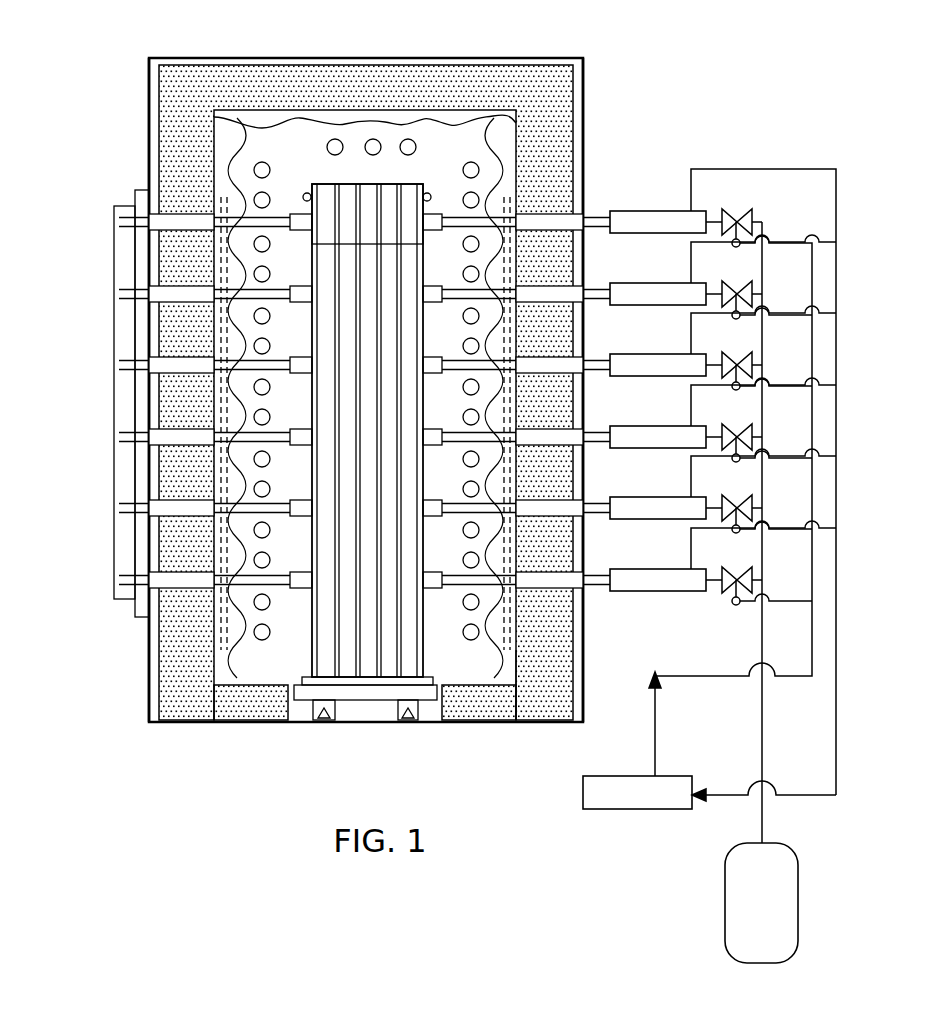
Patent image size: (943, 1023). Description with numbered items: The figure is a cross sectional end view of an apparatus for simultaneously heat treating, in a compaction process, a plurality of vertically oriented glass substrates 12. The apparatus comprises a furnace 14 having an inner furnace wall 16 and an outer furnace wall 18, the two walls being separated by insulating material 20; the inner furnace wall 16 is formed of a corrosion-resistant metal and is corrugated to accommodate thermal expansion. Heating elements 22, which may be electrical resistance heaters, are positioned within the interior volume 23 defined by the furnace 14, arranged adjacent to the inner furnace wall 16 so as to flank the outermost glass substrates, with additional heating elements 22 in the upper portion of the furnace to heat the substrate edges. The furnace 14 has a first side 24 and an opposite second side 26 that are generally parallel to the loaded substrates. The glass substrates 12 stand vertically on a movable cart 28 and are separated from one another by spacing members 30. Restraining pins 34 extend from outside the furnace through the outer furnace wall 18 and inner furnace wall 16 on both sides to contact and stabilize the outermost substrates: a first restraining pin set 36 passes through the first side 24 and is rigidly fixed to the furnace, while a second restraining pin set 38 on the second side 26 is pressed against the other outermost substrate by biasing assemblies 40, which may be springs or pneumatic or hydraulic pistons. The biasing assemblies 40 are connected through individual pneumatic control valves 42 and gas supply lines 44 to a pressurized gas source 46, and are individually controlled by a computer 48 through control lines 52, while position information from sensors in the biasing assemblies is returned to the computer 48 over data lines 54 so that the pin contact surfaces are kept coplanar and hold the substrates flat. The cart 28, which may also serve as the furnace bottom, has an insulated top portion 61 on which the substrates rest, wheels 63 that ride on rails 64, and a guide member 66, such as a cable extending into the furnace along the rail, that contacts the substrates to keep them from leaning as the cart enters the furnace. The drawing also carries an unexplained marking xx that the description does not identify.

The glass substrates 12 is at (337, 184).
The furnace 14 is at (140, 727).
The inner furnace wall 16 is at (258, 670).
The outer furnace wall 18 is at (142, 688).
The insulating material 20 is at (533, 77).
The heating elements 22 is at (228, 137).
The interior volume 23 is at (365, 396).
The first side 24 is at (138, 158).
The second side 26 is at (600, 112).
The movable cart 28 is at (296, 712).
The spacing members 30 is at (347, 184).
The restraining pins 34 is at (136, 588).
The first restraining pin set 36 is at (222, 647).
The second restraining pin set 38 is at (516, 696).
The biasing assemblies 40 is at (633, 211).
The pneumatic control valves 42 is at (722, 227).
The gas supply lines 44 is at (762, 700).
The pressurized gas source 46 is at (763, 963).
The computer 48 is at (622, 809).
The control lines 52 is at (690, 676).
The data lines 54 is at (785, 169).
The insulated top portion 61 is at (436, 680).
The wheels 63 is at (340, 702).
The rails 64 is at (415, 722).
The guide member 66 is at (303, 195).
The unlabeled element xx is at (583, 612).